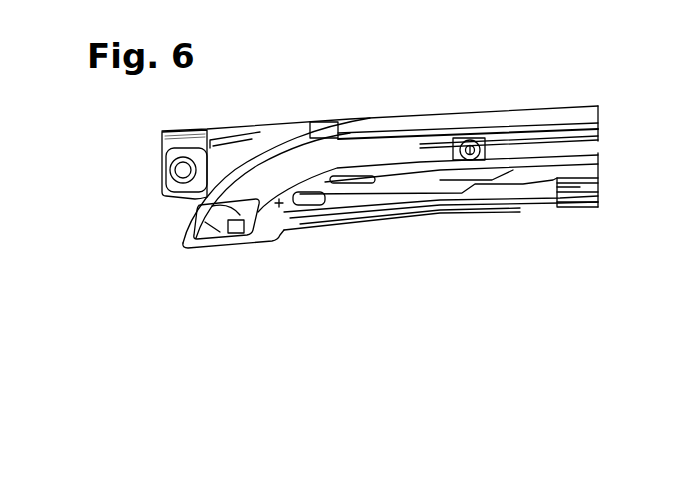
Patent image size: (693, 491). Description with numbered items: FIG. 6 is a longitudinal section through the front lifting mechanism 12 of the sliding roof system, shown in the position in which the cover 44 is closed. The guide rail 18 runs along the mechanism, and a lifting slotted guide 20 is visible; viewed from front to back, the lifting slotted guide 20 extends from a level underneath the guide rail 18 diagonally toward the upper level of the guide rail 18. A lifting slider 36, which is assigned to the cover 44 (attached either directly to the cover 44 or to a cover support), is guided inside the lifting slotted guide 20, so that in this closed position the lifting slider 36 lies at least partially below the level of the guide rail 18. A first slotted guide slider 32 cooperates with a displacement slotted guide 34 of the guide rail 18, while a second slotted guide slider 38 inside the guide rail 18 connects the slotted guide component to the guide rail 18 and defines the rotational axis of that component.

The front lifting mechanism 12 is at (160, 237).
The guide rail 18 is at (600, 129).
The lifting slotted guide 20 is at (287, 167).
The first slotted guide slider 32 is at (313, 192).
The displacement slotted guide 34 is at (543, 172).
The lifting slider 36 is at (210, 229).
The second slotted guide slider 38 is at (234, 148).
The cover 44 is at (413, 120).